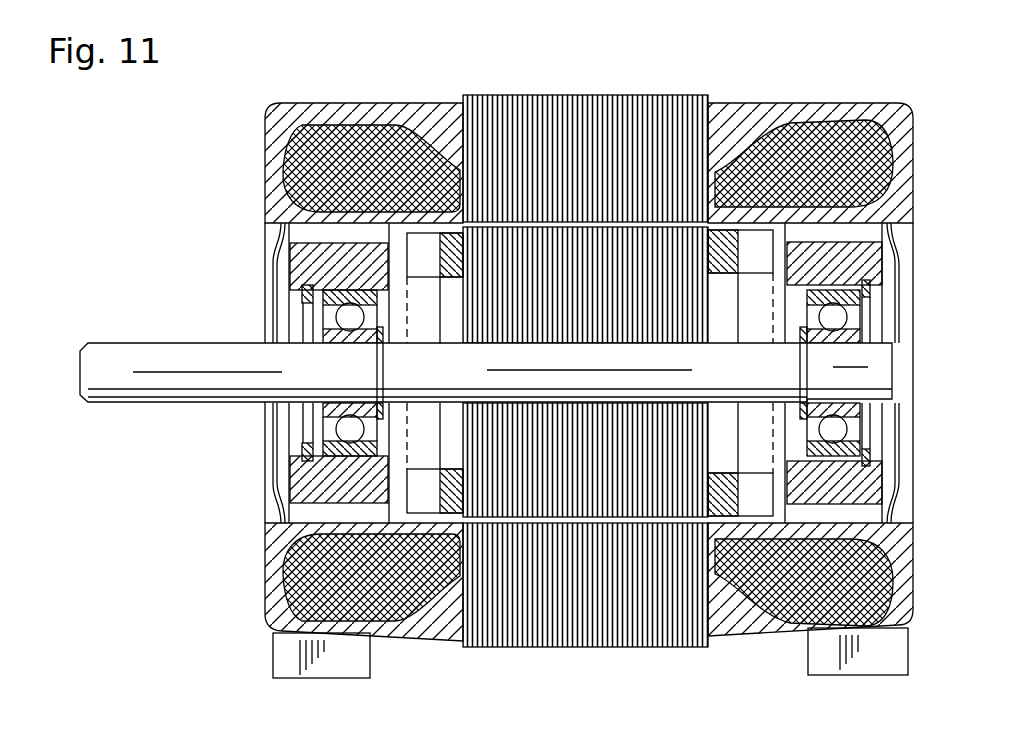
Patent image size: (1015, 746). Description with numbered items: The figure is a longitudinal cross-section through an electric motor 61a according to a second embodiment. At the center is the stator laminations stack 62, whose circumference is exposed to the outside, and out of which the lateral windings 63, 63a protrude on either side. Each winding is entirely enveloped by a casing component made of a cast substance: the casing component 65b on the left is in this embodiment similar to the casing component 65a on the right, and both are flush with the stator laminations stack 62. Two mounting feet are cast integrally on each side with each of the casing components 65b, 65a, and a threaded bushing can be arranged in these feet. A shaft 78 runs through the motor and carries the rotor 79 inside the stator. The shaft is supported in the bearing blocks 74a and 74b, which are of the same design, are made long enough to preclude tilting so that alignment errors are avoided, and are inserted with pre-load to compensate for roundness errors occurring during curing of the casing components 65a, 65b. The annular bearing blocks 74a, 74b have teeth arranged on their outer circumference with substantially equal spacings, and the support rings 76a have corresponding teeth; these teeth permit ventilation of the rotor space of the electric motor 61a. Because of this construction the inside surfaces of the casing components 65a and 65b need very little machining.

The electric motor 61a is at (585, 334).
The stator laminations stack 62 is at (625, 117).
The winding 63 is at (342, 143).
The winding 63a is at (836, 140).
The casing component 65a is at (752, 128).
The casing component 65b is at (432, 120).
The bearing block 74a is at (315, 479).
The bearing block 74b is at (862, 472).
The support ring 76a is at (272, 270).
The shaft 78 is at (116, 362).
The rotor 79 is at (590, 372).